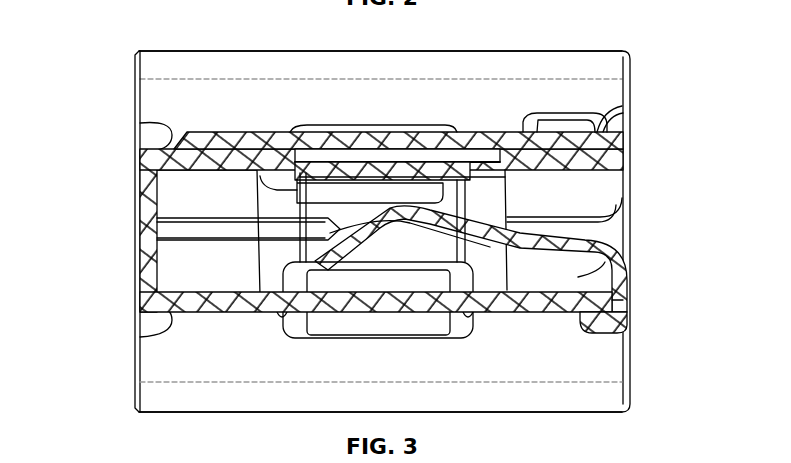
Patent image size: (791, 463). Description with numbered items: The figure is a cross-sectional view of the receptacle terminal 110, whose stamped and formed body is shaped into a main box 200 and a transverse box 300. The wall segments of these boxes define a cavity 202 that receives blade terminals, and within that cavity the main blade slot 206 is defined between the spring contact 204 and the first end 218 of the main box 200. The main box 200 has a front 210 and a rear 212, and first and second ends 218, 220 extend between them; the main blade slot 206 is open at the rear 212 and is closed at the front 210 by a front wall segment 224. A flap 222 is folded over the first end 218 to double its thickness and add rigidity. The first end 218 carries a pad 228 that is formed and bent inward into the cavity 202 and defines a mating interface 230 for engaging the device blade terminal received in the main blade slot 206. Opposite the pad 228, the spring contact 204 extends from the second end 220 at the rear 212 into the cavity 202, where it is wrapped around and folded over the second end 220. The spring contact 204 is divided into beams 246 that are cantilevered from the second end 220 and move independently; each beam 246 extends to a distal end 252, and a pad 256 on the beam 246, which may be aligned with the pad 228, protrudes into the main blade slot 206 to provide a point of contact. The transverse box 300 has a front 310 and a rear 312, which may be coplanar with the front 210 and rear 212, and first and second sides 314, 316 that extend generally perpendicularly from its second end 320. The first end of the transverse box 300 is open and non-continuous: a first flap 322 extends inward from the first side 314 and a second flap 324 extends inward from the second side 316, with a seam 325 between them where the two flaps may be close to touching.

The receptacle terminal 110 is at (112, 24).
The main box 200 is at (253, 303).
The cavity 202 is at (178, 271).
The spring contact 204 is at (603, 240).
The main blade slot 206 is at (588, 187).
The front 210 is at (137, 231).
The rear 212 is at (577, 277).
The first end 218 is at (605, 130).
The second end 220 is at (557, 313).
The flap 222 is at (570, 145).
The front wall segment 224 is at (137, 257).
The pad 228 is at (362, 180).
The mating interface 230 is at (440, 193).
The beam 246 is at (540, 218).
The distal end 252 is at (332, 230).
The pad 256 is at (402, 186).
The transverse box 300 is at (303, 370).
The front 310 is at (630, 87).
The rear 312 is at (135, 97).
The first side 314 is at (253, 51).
The second side 316 is at (177, 413).
The second end 320 is at (450, 367).
The first flap 322 is at (620, 175).
The second flap 324 is at (630, 313).
The seam 325 is at (605, 233).